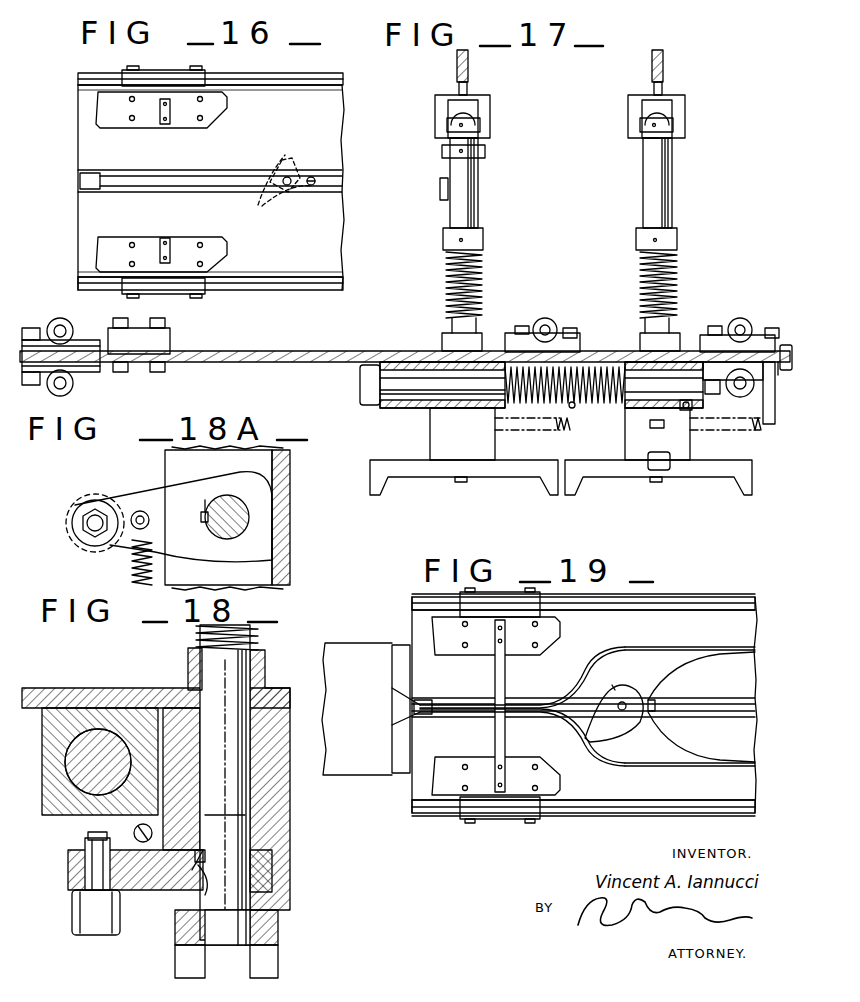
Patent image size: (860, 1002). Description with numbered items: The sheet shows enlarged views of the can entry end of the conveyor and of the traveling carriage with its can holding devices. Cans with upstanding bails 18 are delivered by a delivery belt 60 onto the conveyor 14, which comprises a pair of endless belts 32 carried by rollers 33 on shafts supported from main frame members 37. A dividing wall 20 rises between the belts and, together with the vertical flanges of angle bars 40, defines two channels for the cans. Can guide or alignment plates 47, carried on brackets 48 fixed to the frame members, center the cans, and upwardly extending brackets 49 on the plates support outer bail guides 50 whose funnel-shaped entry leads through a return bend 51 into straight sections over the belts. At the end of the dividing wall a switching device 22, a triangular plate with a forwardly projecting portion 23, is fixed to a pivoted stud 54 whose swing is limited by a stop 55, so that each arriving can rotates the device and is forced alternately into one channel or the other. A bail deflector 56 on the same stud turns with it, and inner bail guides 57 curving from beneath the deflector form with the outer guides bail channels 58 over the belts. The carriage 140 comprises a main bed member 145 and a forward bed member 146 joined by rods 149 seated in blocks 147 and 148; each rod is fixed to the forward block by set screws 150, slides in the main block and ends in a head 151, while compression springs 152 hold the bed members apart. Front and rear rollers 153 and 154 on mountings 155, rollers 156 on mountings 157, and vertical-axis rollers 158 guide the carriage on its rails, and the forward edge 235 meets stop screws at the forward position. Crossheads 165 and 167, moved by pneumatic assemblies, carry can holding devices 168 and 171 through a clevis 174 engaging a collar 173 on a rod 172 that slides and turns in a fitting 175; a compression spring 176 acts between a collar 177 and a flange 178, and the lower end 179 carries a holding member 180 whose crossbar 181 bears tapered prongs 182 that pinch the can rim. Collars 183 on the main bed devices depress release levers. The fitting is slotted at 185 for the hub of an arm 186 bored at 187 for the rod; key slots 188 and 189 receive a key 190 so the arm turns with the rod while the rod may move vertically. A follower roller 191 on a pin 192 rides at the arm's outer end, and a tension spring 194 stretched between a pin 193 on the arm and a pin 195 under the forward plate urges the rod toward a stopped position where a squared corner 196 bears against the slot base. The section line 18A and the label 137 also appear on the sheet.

In FIG. 16, the conveyor 14 is at (98, 140).
In FIG. 19, the conveyor 14 is at (420, 800).
In FIG. 17, the bail 18 is at (680, 267).
In FIG. 18, the section line 18A is at (45, 850).
In FIG. 16, the dividing wall 20 is at (330, 181).
In FIG. 19, the dividing wall 20 is at (745, 705).
In FIG. 16, the switching device 22 is at (283, 160).
In FIG. 16, the forwardly projecting portion 23 is at (262, 206).
In FIG. 16, the endless belts 32 is at (330, 102).
In FIG. 19, the endless belts 32 is at (742, 625).
In FIG. 16, the rollers 33 is at (82, 182).
In FIG. 19, the rollers 33 is at (437, 812).
In FIG. 19, the main frame members 37 is at (752, 595).
In FIG. 16, the angle bars 40 is at (343, 78).
In FIG. 19, the angle bars 40 is at (756, 604).
In FIG. 16, the can guide or alignment plates 47 is at (188, 122).
In FIG. 19, the can guide or alignment plates 47 is at (527, 645).
In FIG. 16, the brackets 48 is at (132, 80).
In FIG. 19, the brackets 48 is at (465, 605).
In FIG. 16, the brackets 49 is at (163, 118).
In FIG. 19, the brackets 49 is at (495, 680).
In FIG. 19, the outer bail guides 50 is at (410, 690).
In FIG. 19, the return bend 51 is at (582, 672).
In FIG. 16, the stud 54 is at (289, 178).
In FIG. 16, the stop 55 is at (312, 178).
In FIG. 19, the stop 55 is at (655, 702).
In FIG. 19, the bail deflector 56 is at (622, 715).
In FIG. 19, the inner bail guides 57 is at (706, 657).
In FIG. 19, the channels 58 is at (678, 647).
In FIG. 19, the delivery belt 60 is at (372, 655).
In FIG. 17, the tab 137 is at (440, 185).
In FIG. 17, the carriage 140 is at (272, 348).
In FIG. 18, the carriage 140 is at (55, 686).
In FIG. 17, the main bed member 145 is at (318, 343).
In FIG. 17, the forward bed member 146 is at (705, 360).
In FIG. 18, the forward bed member 146 is at (95, 690).
In FIG. 17, the block 147 is at (402, 405).
In FIG. 17, the block 148 is at (692, 404).
In FIG. 18, the block 148 is at (46, 735).
In FIG. 17, the rods 149 is at (400, 385).
In FIG. 18, the rods 149 is at (75, 755).
In FIG. 17, the set screws 150 is at (576, 409).
In FIG. 17, the head 151 is at (370, 370).
In FIG. 17, the compression springs 152 is at (600, 365).
In FIG. 17, the front rollers 153 is at (538, 320).
In FIG. 17, the rear rollers 154 is at (50, 320).
In FIG. 17, the mountings 155 is at (85, 345).
In FIG. 17, the rollers 156 is at (752, 395).
In FIG. 17, the mountings 157 is at (722, 338).
In FIG. 17, the rollers 158 is at (790, 345).
In FIG. 17, the crosshead 165 is at (470, 62).
In FIG. 17, the crosshead 167 is at (665, 62).
In FIG. 17, the can holding device 168 is at (672, 180).
In FIG. 17, the can holding device 171 is at (478, 180).
In FIG. 17, the rod 172 is at (458, 213).
In FIG. 18A, the rod 172 is at (240, 505).
In FIG. 18, the rod 172 is at (212, 670).
In FIG. 17, the collar 173 is at (448, 125).
In FIG. 17, the clevis 174 is at (436, 104).
In FIG. 17, the fitting 175 is at (435, 438).
In FIG. 18A, the fitting 175 is at (282, 470).
In FIG. 18, the fitting 175 is at (285, 892).
In FIG. 17, the compression spring 176 is at (446, 272).
In FIG. 18, the compression spring 176 is at (196, 630).
In FIG. 17, the collar 177 is at (444, 238).
In FIG. 17, the flange 178 is at (455, 340).
In FIG. 18, the flange 178 is at (190, 660).
In FIG. 17, the lower end 179 is at (461, 482).
In FIG. 18, the lower end 179 is at (250, 928).
In FIG. 17, the holding member 180 is at (420, 477).
In FIG. 18A, the holding member 180 is at (172, 453).
In FIG. 18, the holding member 180 is at (280, 912).
In FIG. 17, the crossbar 181 is at (515, 470).
In FIG. 18, the crossbar 181 is at (268, 938).
In FIG. 17, the prongs 182 is at (372, 496).
In FIG. 18, the prongs 182 is at (250, 966).
In FIG. 17, the collars 183 is at (443, 152).
In FIG. 18A, the slot 185 is at (168, 477).
In FIG. 18, the slot 185 is at (268, 845).
In FIG. 17, the arm 186 is at (640, 440).
In FIG. 18A, the arm 186 is at (120, 548).
In FIG. 18, the arm 186 is at (70, 878).
In FIG. 18A, the bore 187 is at (242, 522).
In FIG. 18, the bore 187 is at (262, 872).
In FIG. 18, the key slot 188 is at (200, 880).
In FIG. 18A, the key slot 189 is at (205, 508).
In FIG. 18, the key slot 189 is at (246, 813).
In FIG. 18A, the key 190 is at (201, 517).
In FIG. 18, the key 190 is at (200, 868).
In FIG. 17, the follower roller 191 is at (655, 470).
In FIG. 18A, the follower roller 191 is at (68, 523).
In FIG. 18, the follower roller 191 is at (78, 902).
In FIG. 18A, the pin 192 is at (90, 520).
In FIG. 18, the pin 192 is at (88, 862).
In FIG. 17, the pin 193 is at (650, 424).
In FIG. 18A, the pin 193 is at (142, 512).
In FIG. 18, the pin 193 is at (190, 870).
In FIG. 17, the tension spring 194 is at (756, 422).
In FIG. 18A, the tension spring 194 is at (130, 578).
In FIG. 18, the tension spring 194 is at (134, 828).
In FIG. 17, the pin 195 is at (776, 394).
In FIG. 18A, the squared corner 196 is at (262, 545).
In FIG. 17, the forward edge 235 is at (780, 372).